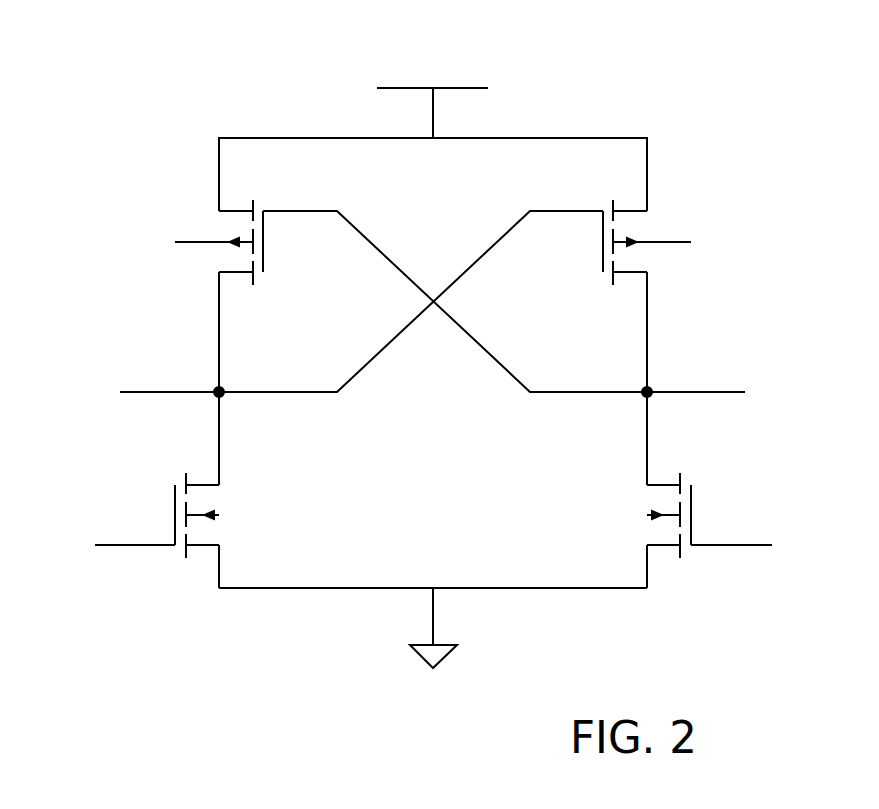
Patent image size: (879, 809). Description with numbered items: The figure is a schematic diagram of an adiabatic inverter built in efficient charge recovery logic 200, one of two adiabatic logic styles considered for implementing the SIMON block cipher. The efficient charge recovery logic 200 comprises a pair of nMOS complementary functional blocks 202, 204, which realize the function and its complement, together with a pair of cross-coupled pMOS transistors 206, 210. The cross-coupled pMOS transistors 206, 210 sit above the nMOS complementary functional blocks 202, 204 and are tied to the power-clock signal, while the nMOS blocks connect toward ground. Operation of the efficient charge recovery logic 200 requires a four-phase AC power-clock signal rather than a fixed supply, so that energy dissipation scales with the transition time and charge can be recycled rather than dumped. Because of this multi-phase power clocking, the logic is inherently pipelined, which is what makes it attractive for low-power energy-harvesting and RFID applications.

The efficient charge recovery logic 200 is at (116, 126).
The nMOS complementary functional block 202 is at (176, 476).
The nMOS complementary functional block 204 is at (690, 476).
The cross-coupled pMOS transistor 206 is at (644, 226).
The cross-coupled pMOS transistor 210 is at (222, 226).